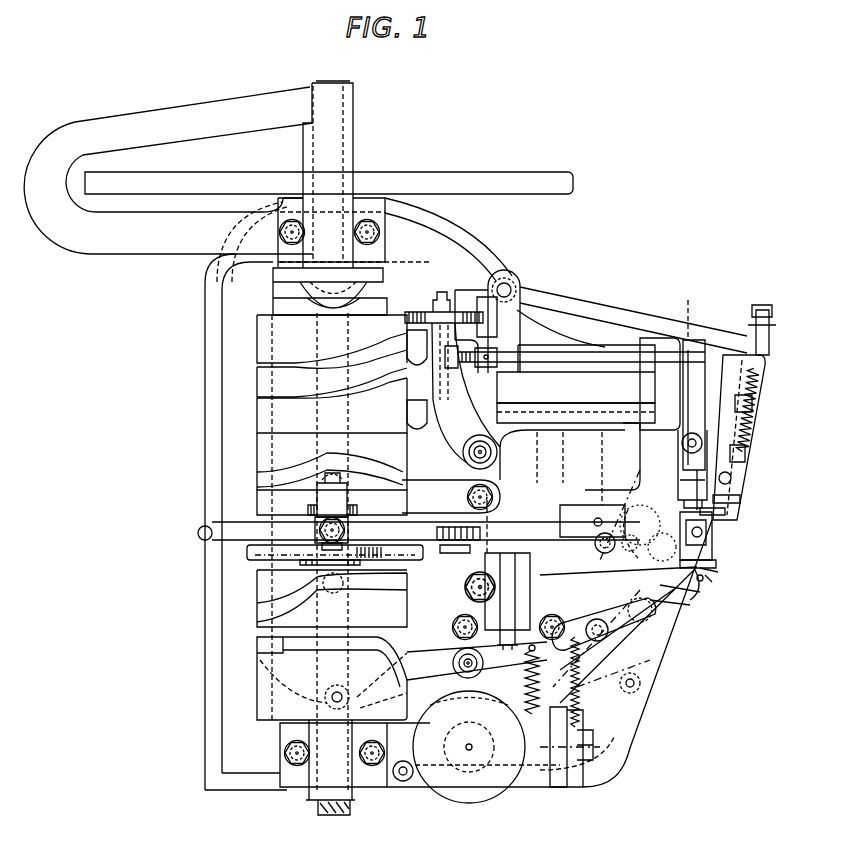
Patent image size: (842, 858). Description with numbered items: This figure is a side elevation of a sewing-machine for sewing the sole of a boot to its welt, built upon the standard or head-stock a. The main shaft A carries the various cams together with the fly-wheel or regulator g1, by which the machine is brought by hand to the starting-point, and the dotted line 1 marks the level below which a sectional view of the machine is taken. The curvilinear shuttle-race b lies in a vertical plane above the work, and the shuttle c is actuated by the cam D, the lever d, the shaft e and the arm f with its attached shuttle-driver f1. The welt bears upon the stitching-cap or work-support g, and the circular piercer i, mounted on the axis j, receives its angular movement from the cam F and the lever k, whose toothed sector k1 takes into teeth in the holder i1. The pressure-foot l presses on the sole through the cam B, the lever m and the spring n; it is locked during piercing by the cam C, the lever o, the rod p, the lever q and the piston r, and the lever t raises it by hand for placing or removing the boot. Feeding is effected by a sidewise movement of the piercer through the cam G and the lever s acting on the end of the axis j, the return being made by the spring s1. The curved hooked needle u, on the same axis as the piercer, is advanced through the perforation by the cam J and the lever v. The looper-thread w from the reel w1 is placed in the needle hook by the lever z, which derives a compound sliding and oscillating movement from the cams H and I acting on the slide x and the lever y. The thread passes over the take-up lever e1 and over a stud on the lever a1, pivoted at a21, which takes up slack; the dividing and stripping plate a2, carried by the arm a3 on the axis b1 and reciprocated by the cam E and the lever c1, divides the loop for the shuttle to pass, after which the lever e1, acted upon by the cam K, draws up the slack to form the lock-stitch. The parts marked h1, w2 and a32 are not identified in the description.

The dotted line 1 is at (198, 532).
The main shaft A is at (329, 459).
The cam B is at (351, 256).
The cam C is at (257, 318).
The cam D is at (257, 375).
The cam E is at (257, 405).
The cam F is at (257, 483).
The cam G is at (257, 507).
The cam H is at (226, 553).
The cam I is at (250, 553).
The cam J is at (257, 607).
The cam K is at (257, 645).
The standard or head-stock a is at (205, 607).
The fly-wheel or regulator g1 is at (298, 170).
The lever m is at (633, 320).
The rod p is at (590, 360).
The shaft e is at (543, 358).
The axis b1 is at (576, 454).
The lever d is at (444, 315).
The lever o is at (466, 396).
The lever c1 is at (455, 372).
The lever k is at (451, 496).
The slide x is at (448, 521).
The lever s is at (445, 510).
The lever y is at (452, 552).
The lever v is at (450, 580).
The take-up lever e1 is at (450, 658).
The spring s1 is at (552, 657).
The lever a1 is at (604, 624).
The curved hooked needle u is at (660, 644).
The pivot a21 is at (632, 674).
The bracket a32 is at (591, 710).
The toothed sector k1 is at (618, 527).
The gear h1 is at (631, 555).
The arm f is at (693, 395).
The looper-thread w is at (683, 469).
The roller bracket w2 is at (672, 495).
The reel w1 is at (486, 747).
The spring n is at (762, 374).
The lever t is at (752, 407).
The piston r is at (745, 452).
The lever q is at (748, 340).
The arm a3 is at (732, 478).
The dividing and stripping plate a2 is at (740, 498).
The shuttle-driver f1 is at (725, 515).
The shuttle c is at (714, 533).
The curvilinear shuttle-race b is at (720, 549).
The pressure-foot l is at (720, 562).
The stitching-cap or work-support g is at (740, 571).
The axis j is at (715, 580).
The lever z is at (711, 584).
The circular piercer i is at (705, 594).
The holder i1 is at (690, 608).